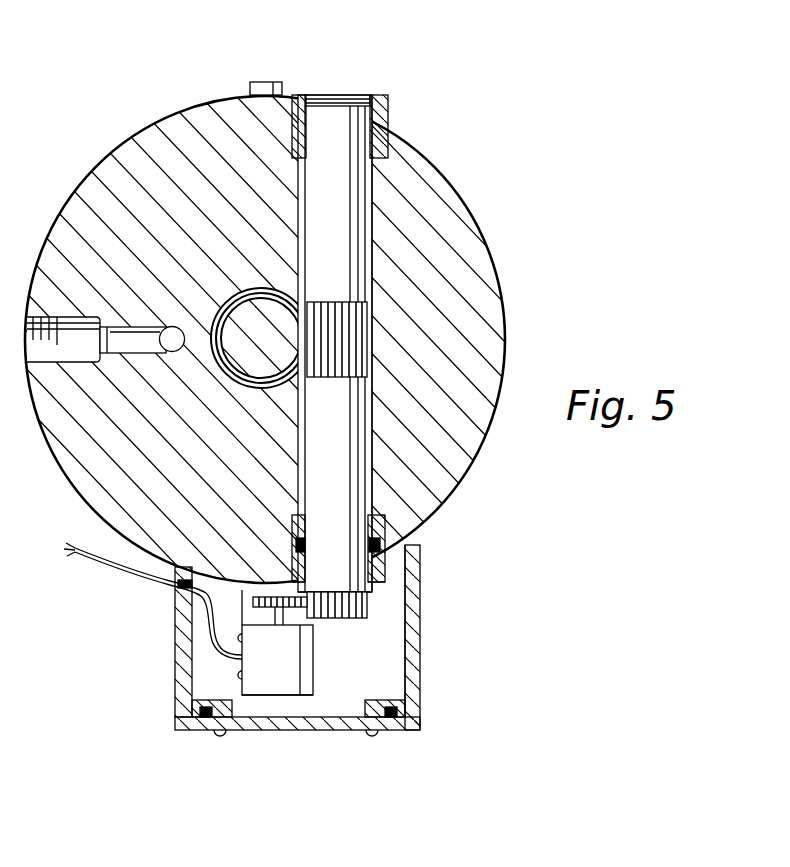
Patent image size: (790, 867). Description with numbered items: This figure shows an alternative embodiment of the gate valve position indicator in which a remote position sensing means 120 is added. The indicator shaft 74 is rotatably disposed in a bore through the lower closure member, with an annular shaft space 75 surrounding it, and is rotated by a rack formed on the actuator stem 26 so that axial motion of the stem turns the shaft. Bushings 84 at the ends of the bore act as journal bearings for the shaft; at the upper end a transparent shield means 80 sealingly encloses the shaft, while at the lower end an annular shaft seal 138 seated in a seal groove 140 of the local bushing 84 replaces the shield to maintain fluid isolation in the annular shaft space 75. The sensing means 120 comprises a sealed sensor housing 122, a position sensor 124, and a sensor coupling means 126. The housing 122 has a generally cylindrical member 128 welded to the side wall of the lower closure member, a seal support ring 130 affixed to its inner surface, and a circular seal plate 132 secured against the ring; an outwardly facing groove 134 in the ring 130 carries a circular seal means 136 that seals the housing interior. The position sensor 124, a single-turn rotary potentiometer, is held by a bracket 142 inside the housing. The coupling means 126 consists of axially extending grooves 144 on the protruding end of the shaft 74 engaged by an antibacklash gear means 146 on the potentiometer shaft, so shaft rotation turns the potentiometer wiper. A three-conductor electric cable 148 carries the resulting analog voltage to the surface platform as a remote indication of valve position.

The actuator stem 26 is at (262, 304).
The indicator shaft 74 is at (370, 191).
The annular shaft space 75 is at (377, 241).
The transparent shield means 80 is at (333, 97).
The bushing 84 is at (306, 515).
The annular shaft seal 138 is at (306, 545).
The seal groove 140 is at (303, 557).
The remote position sensing means 120 is at (313, 742).
The sensor housing 122 is at (430, 620).
The position sensor 124 is at (270, 703).
The sensor coupling means 126 is at (376, 603).
The cylindrical member 128 is at (421, 647).
The seal support ring 130 is at (378, 698).
The seal plate 132 is at (346, 732).
The groove 134 is at (393, 716).
The circular seal means 136 is at (390, 720).
The bracket 142 is at (248, 607).
The axially extending grooves 144 is at (340, 612).
The antibacklash gear means 146 is at (266, 609).
The three-conductor electric cable 148 is at (130, 582).